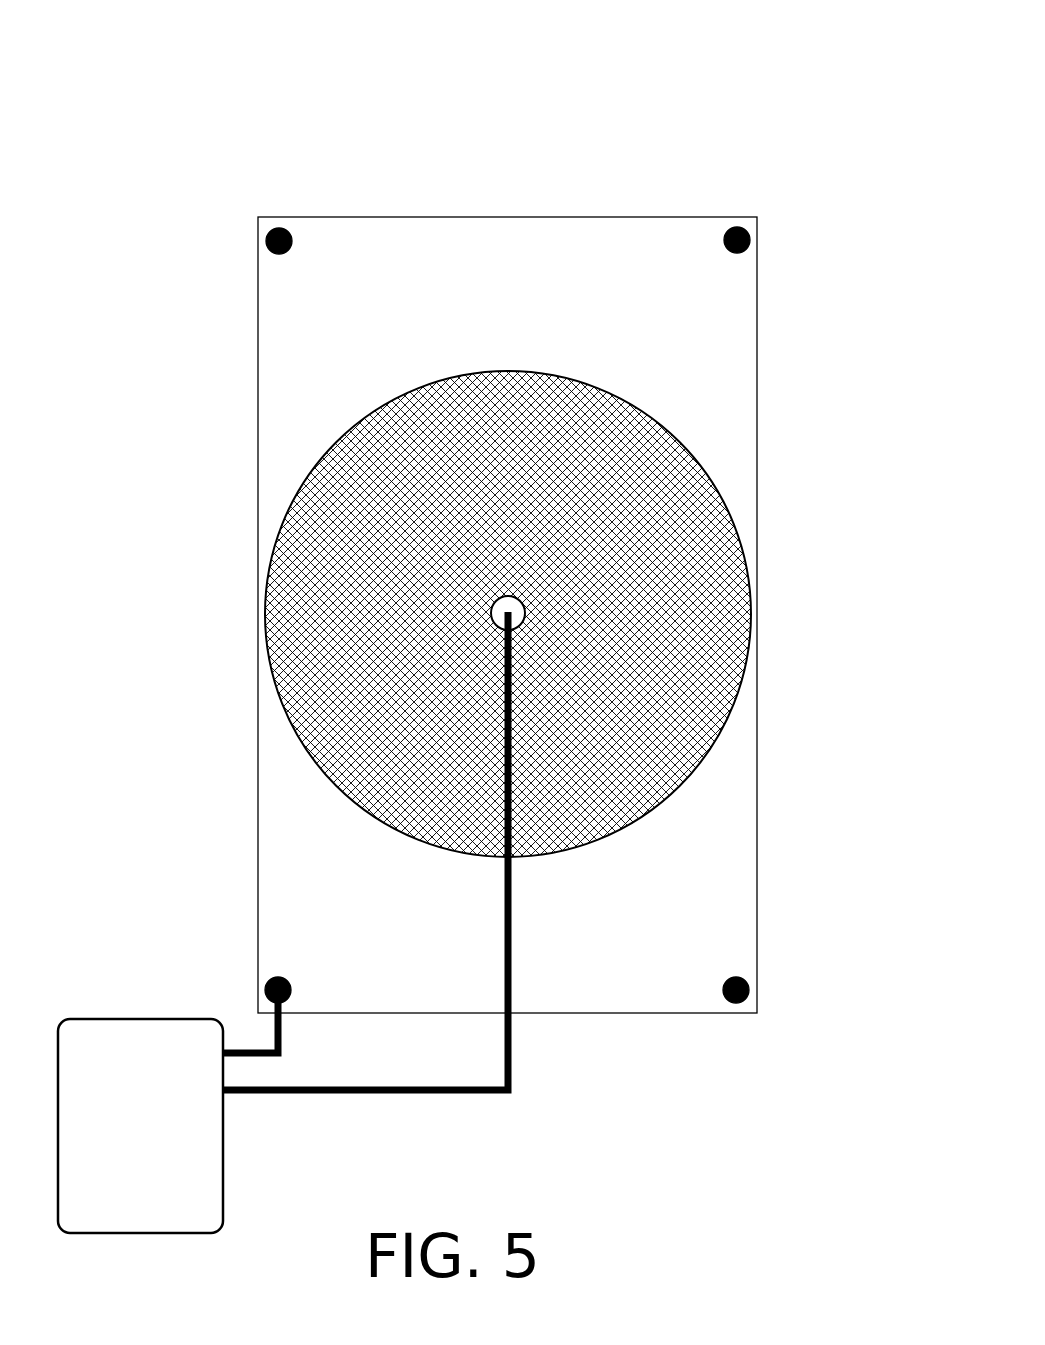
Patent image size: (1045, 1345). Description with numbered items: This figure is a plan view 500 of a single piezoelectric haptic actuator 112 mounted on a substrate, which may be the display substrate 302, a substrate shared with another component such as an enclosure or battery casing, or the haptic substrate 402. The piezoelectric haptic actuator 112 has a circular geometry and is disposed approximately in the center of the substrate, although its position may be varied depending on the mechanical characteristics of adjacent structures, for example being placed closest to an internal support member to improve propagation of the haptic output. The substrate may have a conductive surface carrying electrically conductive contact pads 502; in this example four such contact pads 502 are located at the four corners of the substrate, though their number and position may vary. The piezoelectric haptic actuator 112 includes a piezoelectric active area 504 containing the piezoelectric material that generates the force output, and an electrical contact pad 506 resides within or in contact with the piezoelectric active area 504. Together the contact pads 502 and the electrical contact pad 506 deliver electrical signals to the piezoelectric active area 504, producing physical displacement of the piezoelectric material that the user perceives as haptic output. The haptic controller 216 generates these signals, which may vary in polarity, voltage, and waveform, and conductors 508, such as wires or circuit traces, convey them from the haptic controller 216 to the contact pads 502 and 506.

The plan view 500 is at (740, 62).
The piezoelectric haptic actuator 112 is at (238, 855).
The display substrate 302 is at (526, 549).
The haptic substrate 402 is at (552, 258).
The electrically conductive contact pads 502 is at (272, 230).
The piezoelectric active area 504 is at (388, 503).
The electrical contact pad 506 is at (496, 623).
The conductors 508 is at (365, 851).
The haptic controller 216 is at (140, 1126).